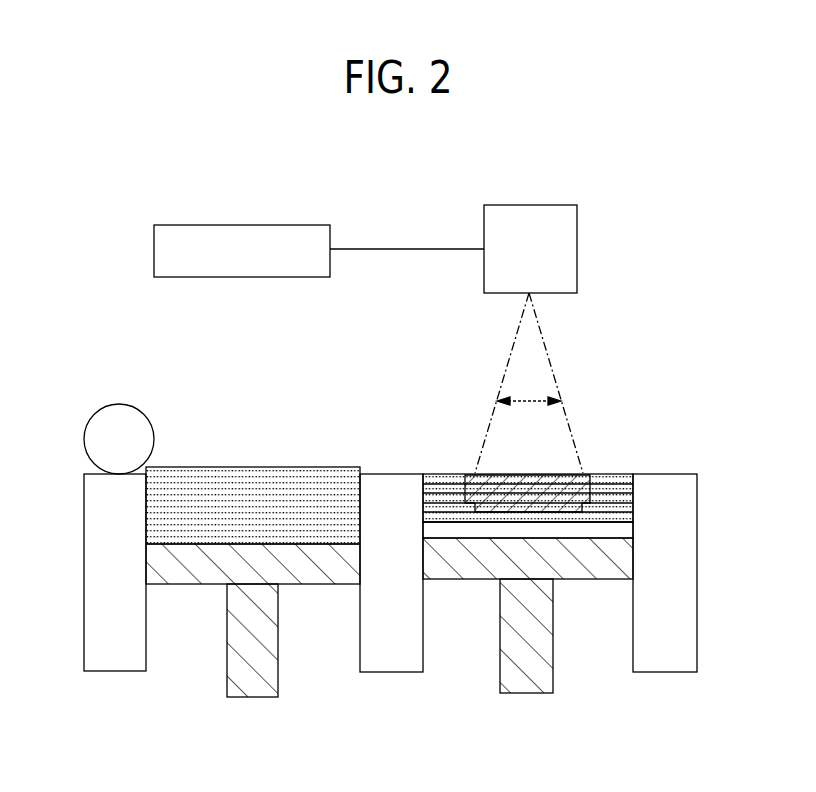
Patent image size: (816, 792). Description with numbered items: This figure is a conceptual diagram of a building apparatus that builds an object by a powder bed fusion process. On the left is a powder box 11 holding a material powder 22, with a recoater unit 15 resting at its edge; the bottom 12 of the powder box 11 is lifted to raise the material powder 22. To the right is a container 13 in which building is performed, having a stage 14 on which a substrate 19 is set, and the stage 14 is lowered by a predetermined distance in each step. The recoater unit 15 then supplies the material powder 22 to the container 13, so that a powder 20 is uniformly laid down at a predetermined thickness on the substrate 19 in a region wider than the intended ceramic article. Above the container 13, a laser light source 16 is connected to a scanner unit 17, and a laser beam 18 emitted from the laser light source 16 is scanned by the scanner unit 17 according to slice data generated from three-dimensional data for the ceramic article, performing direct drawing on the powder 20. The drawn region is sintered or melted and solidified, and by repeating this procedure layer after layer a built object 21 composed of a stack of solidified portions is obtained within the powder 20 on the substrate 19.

The powder box 11 is at (253, 427).
The bottom 12 is at (308, 584).
The container 13 is at (597, 453).
The stage 14 is at (572, 568).
The recoater unit 15 is at (121, 404).
The laser light source 16 is at (252, 225).
The scanner unit 17 is at (530, 205).
The laser beam 18 is at (553, 372).
The substrate 19 is at (627, 532).
The powder 20 is at (448, 474).
The built object 21 is at (518, 473).
The material powder 22 is at (282, 467).